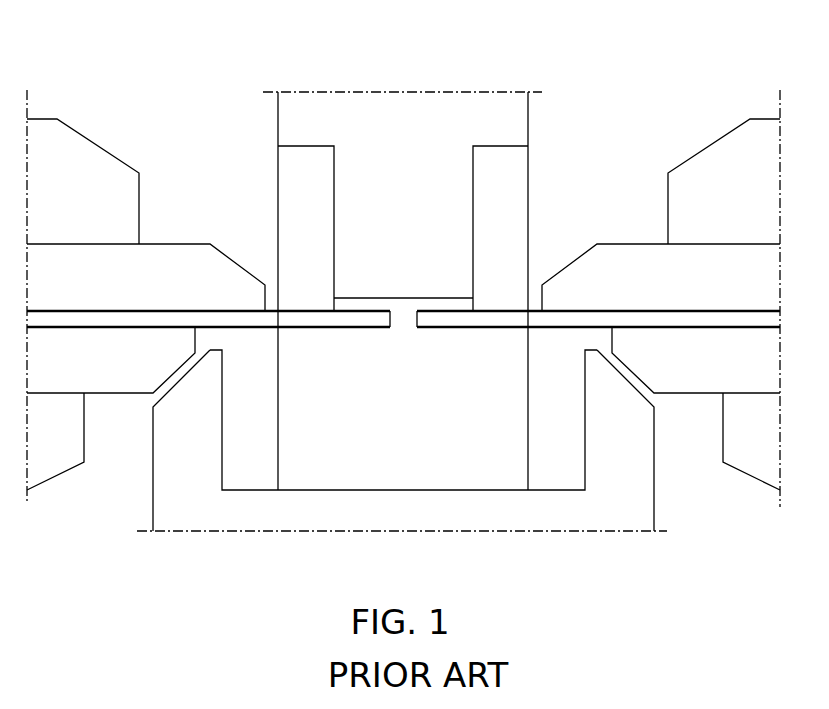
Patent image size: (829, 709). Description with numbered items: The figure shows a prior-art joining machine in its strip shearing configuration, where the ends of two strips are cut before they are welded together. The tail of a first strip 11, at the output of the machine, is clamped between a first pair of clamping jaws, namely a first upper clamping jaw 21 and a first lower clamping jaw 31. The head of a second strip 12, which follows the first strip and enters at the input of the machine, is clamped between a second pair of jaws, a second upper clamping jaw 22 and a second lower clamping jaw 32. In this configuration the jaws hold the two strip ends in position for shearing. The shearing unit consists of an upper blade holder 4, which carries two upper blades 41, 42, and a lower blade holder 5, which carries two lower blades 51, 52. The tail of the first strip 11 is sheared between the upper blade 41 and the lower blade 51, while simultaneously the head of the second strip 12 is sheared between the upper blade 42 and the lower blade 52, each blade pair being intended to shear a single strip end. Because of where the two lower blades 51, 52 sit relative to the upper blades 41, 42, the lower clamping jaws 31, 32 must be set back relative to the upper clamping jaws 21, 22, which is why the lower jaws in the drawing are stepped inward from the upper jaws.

The upper blade holder 4 is at (470, 77).
The upper blade 41 is at (508, 167).
The upper blade 42 is at (298, 167).
The lower blade holder 5 is at (438, 494).
The lower blade 51 is at (628, 477).
The lower blade 52 is at (169, 476).
The first strip 11 is at (595, 329).
The second strip 12 is at (208, 452).
The first upper clamping jaw 21 is at (640, 115).
The second upper clamping jaw 22 is at (147, 140).
The first lower clamping jaw 31 is at (722, 483).
The second lower clamping jaw 32 is at (94, 484).